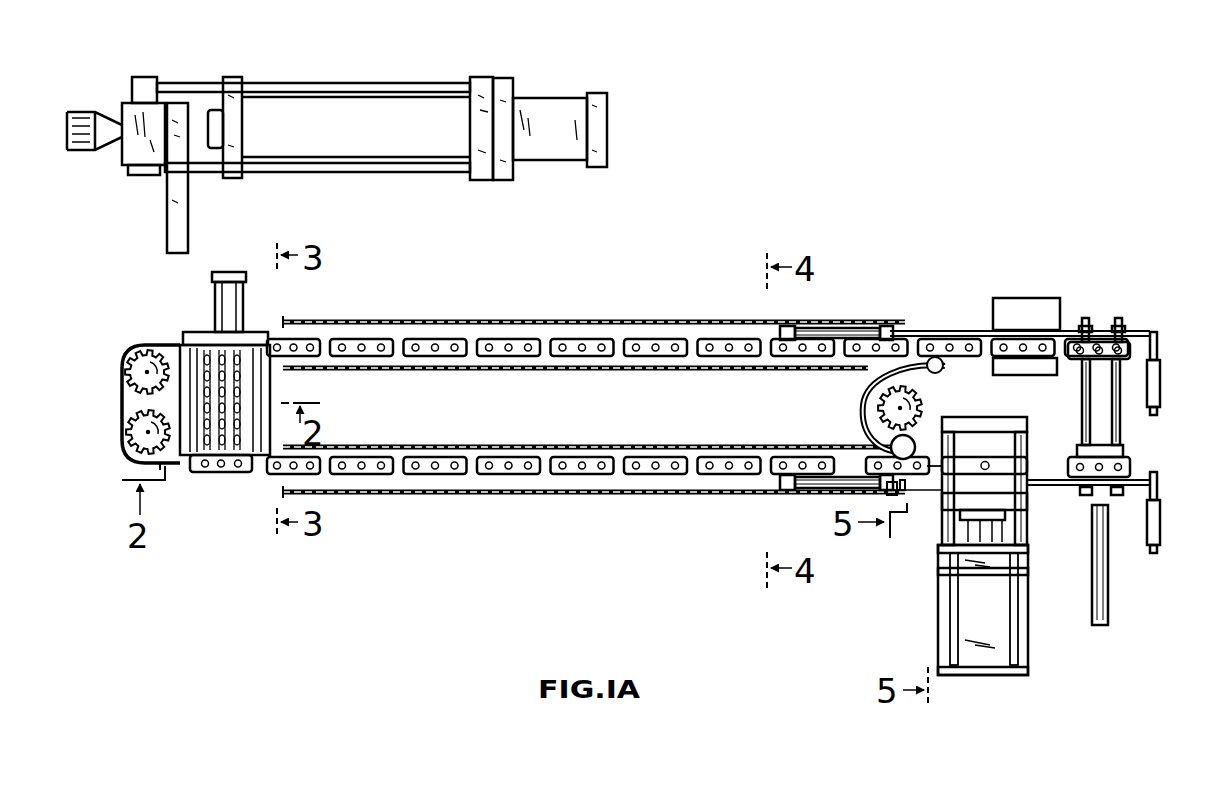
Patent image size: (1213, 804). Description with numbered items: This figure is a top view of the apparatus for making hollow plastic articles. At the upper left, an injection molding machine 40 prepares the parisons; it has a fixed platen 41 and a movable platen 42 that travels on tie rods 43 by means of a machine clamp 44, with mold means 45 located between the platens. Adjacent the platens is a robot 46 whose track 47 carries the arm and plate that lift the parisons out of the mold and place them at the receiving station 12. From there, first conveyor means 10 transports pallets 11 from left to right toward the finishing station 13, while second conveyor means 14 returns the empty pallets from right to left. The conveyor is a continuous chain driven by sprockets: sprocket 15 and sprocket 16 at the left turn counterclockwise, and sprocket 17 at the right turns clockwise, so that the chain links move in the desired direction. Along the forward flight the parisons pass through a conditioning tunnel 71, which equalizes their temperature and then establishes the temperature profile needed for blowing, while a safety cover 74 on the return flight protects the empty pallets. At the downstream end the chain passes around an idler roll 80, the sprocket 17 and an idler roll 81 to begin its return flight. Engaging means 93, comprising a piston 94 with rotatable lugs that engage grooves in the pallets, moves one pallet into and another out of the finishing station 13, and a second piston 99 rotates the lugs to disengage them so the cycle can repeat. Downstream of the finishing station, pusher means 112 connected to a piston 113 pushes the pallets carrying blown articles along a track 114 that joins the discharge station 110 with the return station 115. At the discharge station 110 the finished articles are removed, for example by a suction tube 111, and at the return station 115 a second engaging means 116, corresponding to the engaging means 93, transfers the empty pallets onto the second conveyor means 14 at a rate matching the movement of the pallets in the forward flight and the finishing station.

The first conveyor means 10 is at (180, 470).
The pallets 11 is at (441, 357).
The receiving station 12 is at (283, 391).
The finishing station 13 is at (1001, 410).
The second conveyor means 14 is at (180, 342).
The sprocket 15 is at (122, 358).
The sprocket 16 is at (122, 442).
The sprocket 17 is at (922, 404).
The injection molding machine 40 is at (603, 88).
The fixed platen 41 is at (158, 78).
The movable platen 42 is at (237, 84).
The tie rods 43 is at (313, 158).
The machine clamp 44 is at (543, 148).
The mold means 45 is at (215, 133).
The robot 46 is at (132, 110).
The track 47 is at (184, 222).
The conditioning tunnel 71 is at (555, 371).
The safety cover 74 is at (605, 445).
The idler roll 80 is at (892, 443).
The idler roll 81 is at (938, 372).
The engaging means 93 is at (864, 503).
The piston 94 is at (806, 489).
The second piston 99 is at (1160, 530).
The discharge station 110 is at (1023, 293).
The suction tube 111 is at (993, 320).
The pusher means 112 is at (1088, 491).
The piston 113 is at (1108, 595).
The track 114 is at (1092, 440).
The return station 115 is at (1107, 306).
The second engaging means 116 is at (897, 313).